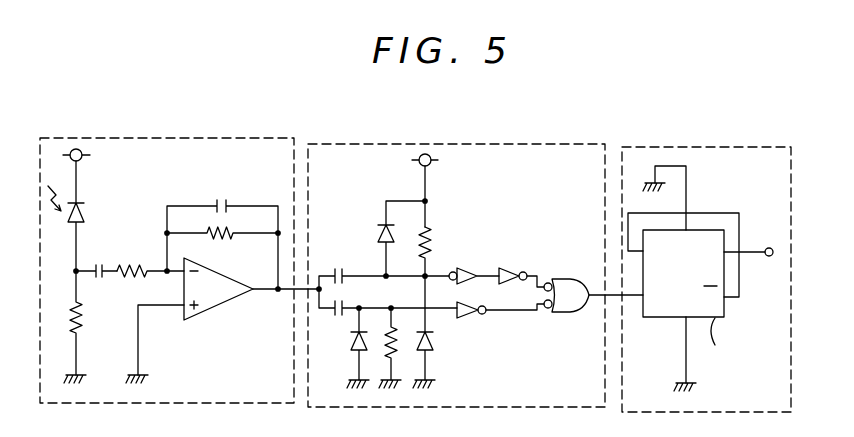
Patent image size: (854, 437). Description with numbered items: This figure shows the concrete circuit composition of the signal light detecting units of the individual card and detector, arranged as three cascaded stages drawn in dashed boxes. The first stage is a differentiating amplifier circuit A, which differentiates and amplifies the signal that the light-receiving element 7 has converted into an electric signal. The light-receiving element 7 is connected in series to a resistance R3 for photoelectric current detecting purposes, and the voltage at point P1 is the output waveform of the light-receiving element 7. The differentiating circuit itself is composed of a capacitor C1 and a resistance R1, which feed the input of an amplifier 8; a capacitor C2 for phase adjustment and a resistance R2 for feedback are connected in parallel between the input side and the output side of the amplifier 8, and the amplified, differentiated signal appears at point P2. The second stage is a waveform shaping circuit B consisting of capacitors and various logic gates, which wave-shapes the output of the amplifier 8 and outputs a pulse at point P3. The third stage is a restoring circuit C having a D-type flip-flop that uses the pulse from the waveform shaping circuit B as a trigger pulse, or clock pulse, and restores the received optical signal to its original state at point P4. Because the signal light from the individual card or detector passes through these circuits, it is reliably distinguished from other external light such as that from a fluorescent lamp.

The light-receiving element 7 is at (84, 217).
The amplifier 8 is at (218, 309).
The differentiating amplifier circuit A is at (160, 138).
The waveform shaping circuit B is at (462, 144).
The restoring circuit C is at (680, 147).
The capacitor C1 is at (96, 256).
The capacitor for phase adjustment C2 is at (222, 201).
The resistance R1 is at (150, 256).
The resistance for feedback R2 is at (222, 258).
The resistance for photoelectric current detecting R3 is at (88, 327).
The point P1 is at (80, 274).
The point P2 is at (277, 295).
The point P3 is at (594, 299).
The point P4 is at (768, 257).